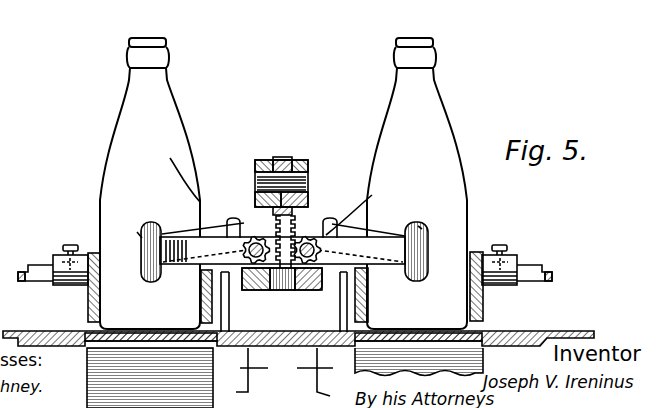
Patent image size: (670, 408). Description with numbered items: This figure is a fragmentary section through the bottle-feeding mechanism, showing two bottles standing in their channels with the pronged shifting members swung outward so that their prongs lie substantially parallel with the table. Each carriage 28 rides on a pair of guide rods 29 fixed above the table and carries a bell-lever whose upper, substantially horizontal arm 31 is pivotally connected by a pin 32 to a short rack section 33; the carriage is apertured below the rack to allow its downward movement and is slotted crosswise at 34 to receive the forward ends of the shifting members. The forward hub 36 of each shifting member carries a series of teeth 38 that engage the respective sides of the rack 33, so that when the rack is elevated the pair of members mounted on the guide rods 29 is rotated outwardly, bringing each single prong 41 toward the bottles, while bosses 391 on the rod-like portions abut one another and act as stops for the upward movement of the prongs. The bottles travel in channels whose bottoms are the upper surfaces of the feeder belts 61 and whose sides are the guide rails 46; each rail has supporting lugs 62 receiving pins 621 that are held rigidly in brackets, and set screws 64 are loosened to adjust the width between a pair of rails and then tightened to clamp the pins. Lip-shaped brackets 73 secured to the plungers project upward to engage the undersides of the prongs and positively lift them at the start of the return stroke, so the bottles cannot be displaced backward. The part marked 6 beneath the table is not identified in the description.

The frame / base plate 6 is at (298, 363).
The carriage 28 is at (316, 285).
The guide rods 29 is at (257, 240).
The upper arm of bell-lever 31 is at (302, 160).
The pin 32 is at (307, 178).
The rack section 33 is at (317, 194).
The slot 34 is at (263, 284).
The forward hub 36 is at (247, 250).
The teeth 38 is at (255, 207).
The bosses 391 is at (176, 140).
The single prong 41 is at (142, 238).
The guide rails 46 is at (200, 279).
The feeder belts 61 is at (157, 349).
The supporting lugs 62 is at (67, 281).
The pins 621 is at (60, 213).
The set screws 64 is at (68, 243).
The lip-shaped brackets 73 is at (226, 298).